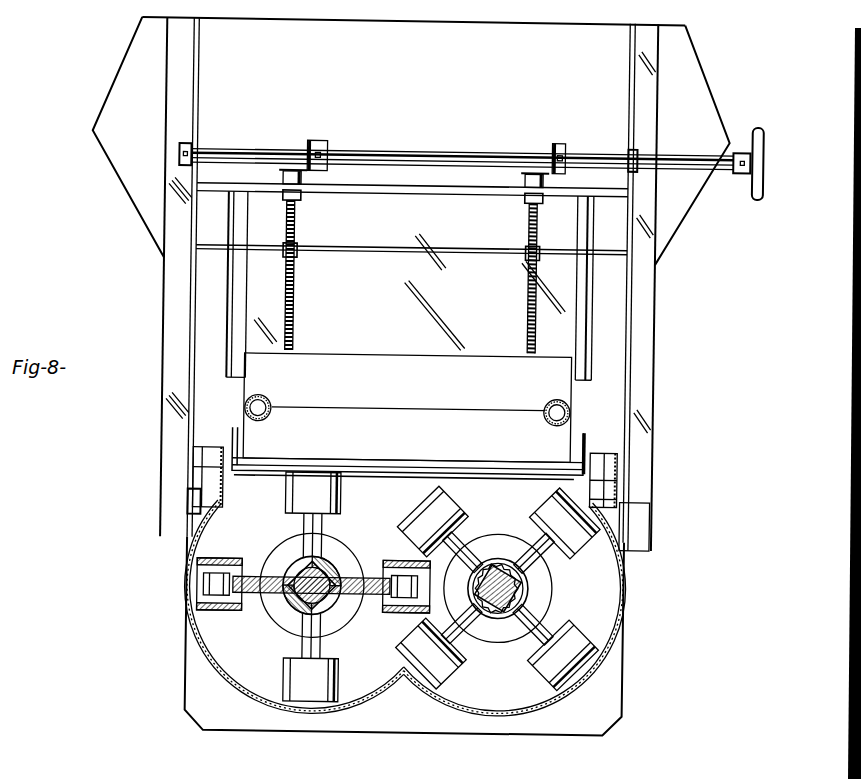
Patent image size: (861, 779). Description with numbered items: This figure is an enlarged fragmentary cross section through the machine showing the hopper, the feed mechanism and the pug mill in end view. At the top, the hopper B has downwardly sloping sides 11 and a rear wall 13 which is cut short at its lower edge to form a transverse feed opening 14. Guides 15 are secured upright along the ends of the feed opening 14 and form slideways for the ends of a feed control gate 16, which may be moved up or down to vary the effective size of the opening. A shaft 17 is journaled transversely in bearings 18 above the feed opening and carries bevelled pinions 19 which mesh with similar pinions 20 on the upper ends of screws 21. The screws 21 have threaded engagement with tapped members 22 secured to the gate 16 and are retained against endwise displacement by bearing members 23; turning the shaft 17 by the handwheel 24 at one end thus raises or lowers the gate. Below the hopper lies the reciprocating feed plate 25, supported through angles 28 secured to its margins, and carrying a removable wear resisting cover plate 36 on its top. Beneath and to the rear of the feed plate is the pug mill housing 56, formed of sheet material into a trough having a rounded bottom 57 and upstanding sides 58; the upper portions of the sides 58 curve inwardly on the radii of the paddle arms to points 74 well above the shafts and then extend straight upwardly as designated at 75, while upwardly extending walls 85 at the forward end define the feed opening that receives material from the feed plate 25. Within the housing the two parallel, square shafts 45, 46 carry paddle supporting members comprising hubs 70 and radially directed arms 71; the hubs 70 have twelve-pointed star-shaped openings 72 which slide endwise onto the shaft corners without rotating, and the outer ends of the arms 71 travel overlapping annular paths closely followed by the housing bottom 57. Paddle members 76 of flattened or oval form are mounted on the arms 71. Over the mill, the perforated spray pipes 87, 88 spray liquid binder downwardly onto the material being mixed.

The downwardly sloping sides 11 is at (131, 200).
The rear wall 13 is at (458, 24).
The transverse feed opening 14 is at (424, 360).
The guides 15 is at (240, 320).
The feed control gate 16 is at (422, 246).
The shaft 17 is at (428, 142).
The bearings 18 is at (176, 148).
The bevelled pinions 19 is at (326, 140).
The pinions 20 is at (303, 182).
The screws 21 is at (294, 236).
The tapped members 22 is at (297, 257).
The bearing members 23 is at (299, 200).
The handwheel 24 is at (760, 196).
The feed plate 25 is at (512, 478).
The angles 28 is at (586, 452).
The wear resisting cover plate 36 is at (423, 462).
The shaft 45 is at (525, 580).
The shaft 46 is at (322, 562).
The pug mill housing 56 is at (622, 520).
The rounded bottom 57 is at (360, 700).
The upstanding sides 58 is at (190, 638).
The hubs 70 is at (292, 610).
The radially directed arms 71 is at (325, 628).
The openings 72 is at (295, 550).
The points 74 is at (195, 501).
The straight upward side portions 75 is at (194, 469).
The paddle members 76 is at (343, 502).
The upwardly extending walls 85 is at (196, 452).
The perforated spray pipe 87 is at (546, 405).
The perforated spray pipe 88 is at (266, 402).